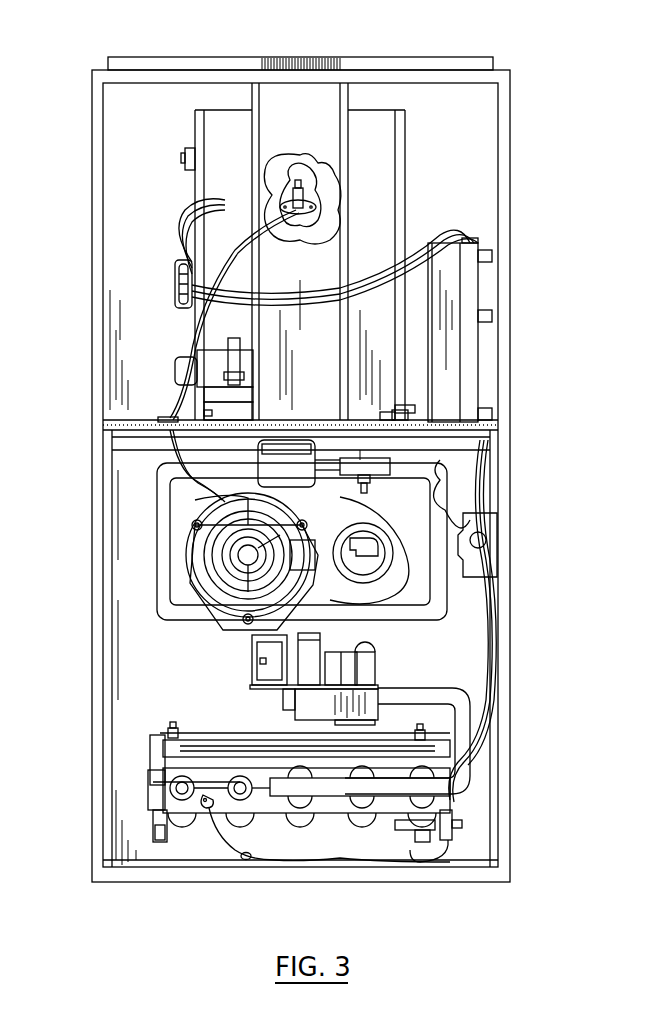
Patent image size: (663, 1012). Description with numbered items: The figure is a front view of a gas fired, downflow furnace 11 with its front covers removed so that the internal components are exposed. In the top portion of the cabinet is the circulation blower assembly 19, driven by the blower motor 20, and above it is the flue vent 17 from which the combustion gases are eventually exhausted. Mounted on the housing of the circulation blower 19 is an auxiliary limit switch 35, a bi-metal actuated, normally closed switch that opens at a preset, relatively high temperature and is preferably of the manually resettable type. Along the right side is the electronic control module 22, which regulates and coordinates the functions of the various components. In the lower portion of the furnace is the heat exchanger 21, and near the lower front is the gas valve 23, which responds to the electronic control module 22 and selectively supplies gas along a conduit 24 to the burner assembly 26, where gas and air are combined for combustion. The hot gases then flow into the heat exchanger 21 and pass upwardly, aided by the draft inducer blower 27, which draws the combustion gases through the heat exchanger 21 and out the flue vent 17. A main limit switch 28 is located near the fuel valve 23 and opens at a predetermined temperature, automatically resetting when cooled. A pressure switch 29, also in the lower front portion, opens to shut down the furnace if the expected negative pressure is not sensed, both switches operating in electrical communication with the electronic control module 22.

The furnace cabinet 11 is at (512, 230).
The flue vent 17 is at (287, 57).
The circulation blower assembly 19 is at (386, 135).
The blower motor 20 is at (181, 158).
The heat exchanger 21 is at (362, 825).
The electronic control module 22 is at (490, 293).
The gas valve 23 is at (375, 700).
The conduit 24 is at (465, 740).
The burner assembly 26 is at (163, 772).
The draft inducer blower 27 is at (228, 555).
The main limit switch 28 is at (252, 648).
The pressure switch 29 is at (362, 578).
The auxiliary limit switch 35 is at (316, 185).